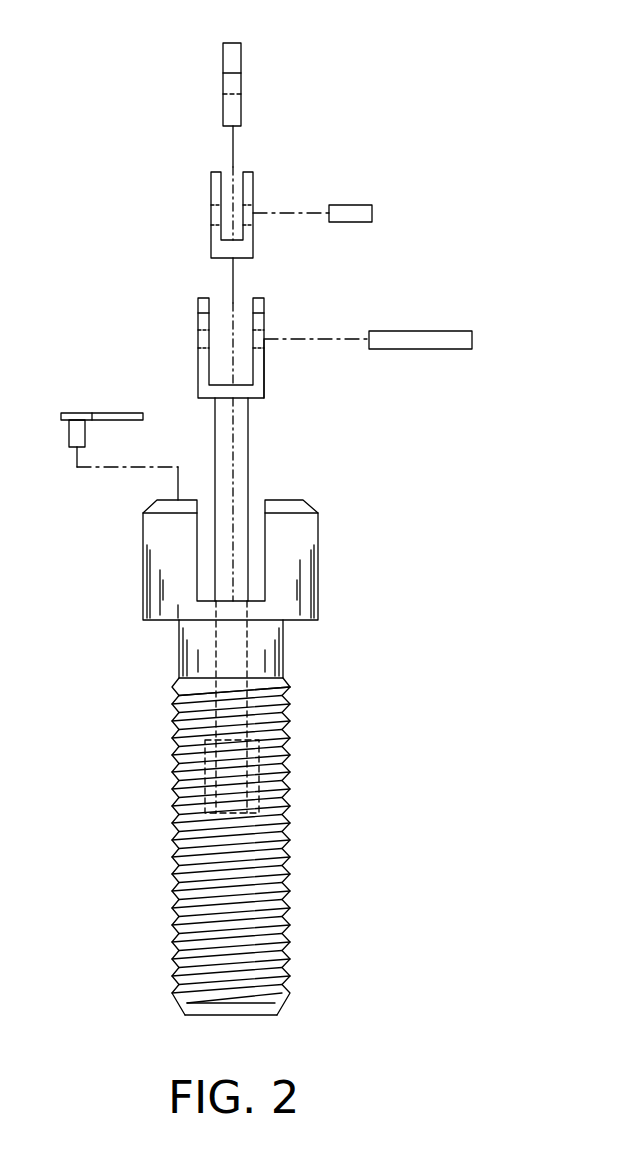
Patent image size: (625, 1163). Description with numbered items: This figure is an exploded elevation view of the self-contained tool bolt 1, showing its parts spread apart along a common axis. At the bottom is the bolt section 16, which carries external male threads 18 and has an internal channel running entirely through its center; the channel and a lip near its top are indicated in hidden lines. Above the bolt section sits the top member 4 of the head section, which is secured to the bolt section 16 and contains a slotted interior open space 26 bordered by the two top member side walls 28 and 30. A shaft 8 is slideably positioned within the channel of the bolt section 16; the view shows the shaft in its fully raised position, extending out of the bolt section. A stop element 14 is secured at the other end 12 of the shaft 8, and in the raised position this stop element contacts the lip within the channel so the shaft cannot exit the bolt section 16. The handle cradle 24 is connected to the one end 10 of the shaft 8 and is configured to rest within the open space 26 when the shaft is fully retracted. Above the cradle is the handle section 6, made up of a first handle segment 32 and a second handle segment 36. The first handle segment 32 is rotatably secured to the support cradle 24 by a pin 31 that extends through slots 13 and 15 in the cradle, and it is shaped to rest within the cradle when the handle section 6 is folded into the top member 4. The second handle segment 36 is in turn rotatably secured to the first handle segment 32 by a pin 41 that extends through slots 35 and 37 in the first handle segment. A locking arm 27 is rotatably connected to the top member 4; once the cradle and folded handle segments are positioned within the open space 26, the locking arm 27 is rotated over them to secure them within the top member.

The tool bolt 1 is at (273, 702).
The top member 4 is at (170, 603).
The handle section 6 is at (245, 150).
The shaft 8 is at (250, 722).
The one end of shaft 10 is at (208, 400).
The other end of shaft 12 is at (233, 742).
The slot in support cradle 13 is at (260, 338).
The stop element 14 is at (240, 788).
The slot in support cradle 15 is at (207, 342).
The bolt section 16 is at (179, 672).
The external male threads 18 is at (283, 857).
The handle cradle 24 is at (263, 367).
The slotted interior open space 26 is at (258, 540).
The locking arm 27 is at (112, 412).
The top member side wall 28 is at (297, 533).
The top member side wall 30 is at (167, 523).
The pin 31 is at (433, 333).
The first handle segment 32 is at (250, 193).
The slot in first handle segment 35 is at (250, 210).
The second handle segment 36 is at (233, 58).
The slot in first handle segment 37 is at (217, 213).
The pin 41 is at (372, 208).